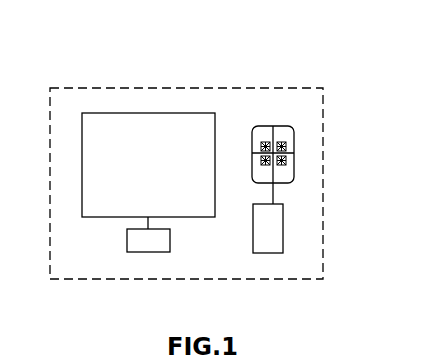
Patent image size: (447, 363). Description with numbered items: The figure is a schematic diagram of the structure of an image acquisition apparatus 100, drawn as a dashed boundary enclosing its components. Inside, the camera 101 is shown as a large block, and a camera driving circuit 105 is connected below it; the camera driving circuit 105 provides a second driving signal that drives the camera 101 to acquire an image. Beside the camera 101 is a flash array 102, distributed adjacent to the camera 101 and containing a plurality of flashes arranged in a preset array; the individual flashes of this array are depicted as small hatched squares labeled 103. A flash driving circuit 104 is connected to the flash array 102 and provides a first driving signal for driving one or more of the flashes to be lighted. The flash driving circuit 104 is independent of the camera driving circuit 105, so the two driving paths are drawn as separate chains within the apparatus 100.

The image acquisition apparatus 100 is at (73, 88).
The camera 101 is at (142, 118).
The flash array 102 is at (265, 125).
The sensor elements 103 is at (283, 146).
The flash driving circuit 104 is at (283, 228).
The camera driving circuit 105 is at (148, 239).